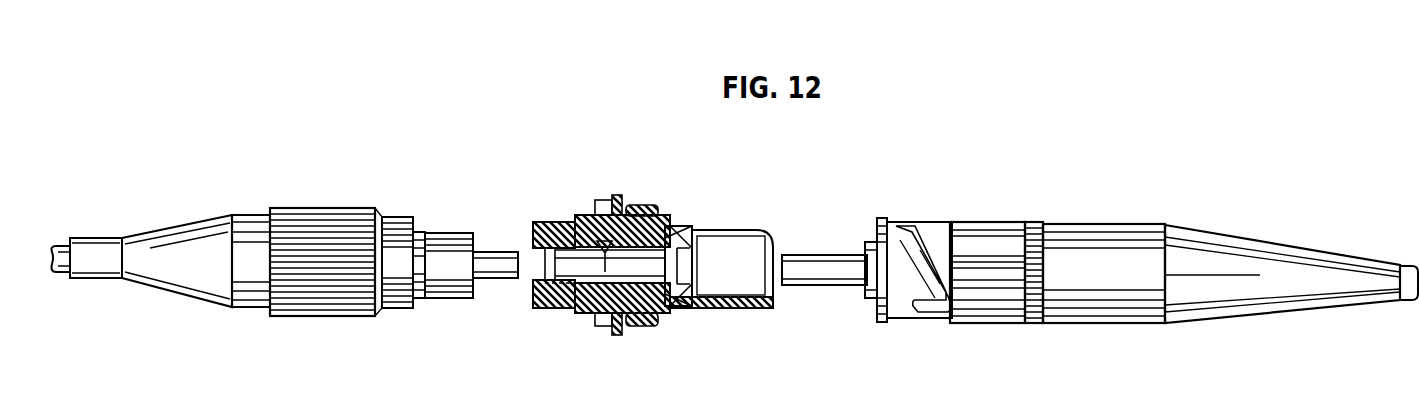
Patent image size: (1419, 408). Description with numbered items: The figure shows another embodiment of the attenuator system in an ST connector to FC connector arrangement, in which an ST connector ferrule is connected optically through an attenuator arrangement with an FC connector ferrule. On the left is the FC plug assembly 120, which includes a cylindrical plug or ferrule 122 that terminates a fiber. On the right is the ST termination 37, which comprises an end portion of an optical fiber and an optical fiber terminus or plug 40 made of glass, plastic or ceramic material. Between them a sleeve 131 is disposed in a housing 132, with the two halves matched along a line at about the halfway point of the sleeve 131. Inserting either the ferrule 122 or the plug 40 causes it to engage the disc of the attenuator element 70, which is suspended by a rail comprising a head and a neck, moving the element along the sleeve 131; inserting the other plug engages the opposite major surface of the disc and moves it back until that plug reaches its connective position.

The plug assembly 120 is at (406, 181).
The cylindrical plug or ferrule 122 is at (493, 251).
The attenuator element 70 is at (624, 266).
The sleeve 131 is at (670, 240).
The housing 132 is at (655, 316).
The optical fiber terminus or plug 40 is at (822, 254).
The optical fiber termination or plug assembly 37 is at (1002, 191).